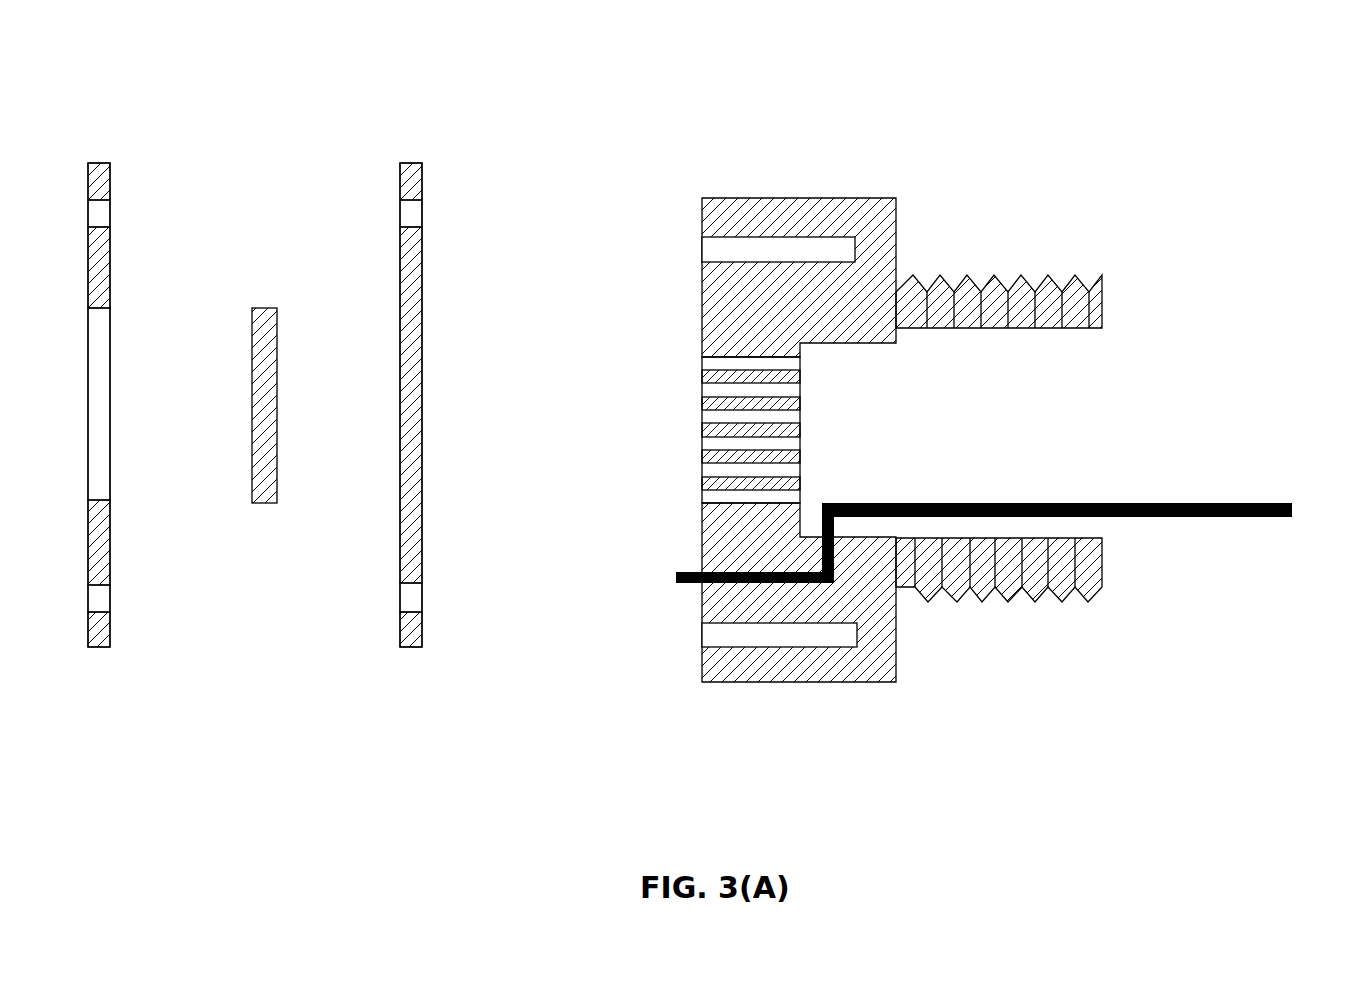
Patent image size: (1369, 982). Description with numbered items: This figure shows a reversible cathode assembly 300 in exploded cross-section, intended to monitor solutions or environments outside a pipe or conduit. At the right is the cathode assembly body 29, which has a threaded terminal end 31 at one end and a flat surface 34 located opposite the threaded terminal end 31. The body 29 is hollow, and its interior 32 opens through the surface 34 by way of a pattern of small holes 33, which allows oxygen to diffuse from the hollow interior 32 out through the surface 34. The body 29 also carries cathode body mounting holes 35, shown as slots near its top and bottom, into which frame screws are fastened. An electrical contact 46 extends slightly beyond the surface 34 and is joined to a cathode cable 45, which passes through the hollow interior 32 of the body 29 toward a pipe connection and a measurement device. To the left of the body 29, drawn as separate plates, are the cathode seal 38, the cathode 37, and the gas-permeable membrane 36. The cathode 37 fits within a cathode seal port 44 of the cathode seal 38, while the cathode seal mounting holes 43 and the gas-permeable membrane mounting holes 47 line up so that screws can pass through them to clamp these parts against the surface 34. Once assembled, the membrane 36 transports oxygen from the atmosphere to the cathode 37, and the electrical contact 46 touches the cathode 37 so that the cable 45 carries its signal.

The reversible cathode assembly 300 is at (1139, 70).
The body 29 is at (773, 197).
The threaded terminal end 31 is at (1045, 300).
The interior 32 is at (1063, 447).
The pattern of small holes 33 is at (712, 368).
The surface 34 is at (702, 277).
The cathode body mounting holes 35 is at (750, 246).
The gas-permeable membrane 36 is at (412, 162).
The cathode 37 is at (264, 307).
The cathode seal 38 is at (99, 162).
The cathode seal mounting holes 43 is at (128, 212).
The cathode seal port 44 is at (128, 407).
The cathode cable 45 is at (1255, 514).
The electrical contact 46 is at (680, 580).
The gas-permeable membrane mounting holes 47 is at (440, 212).